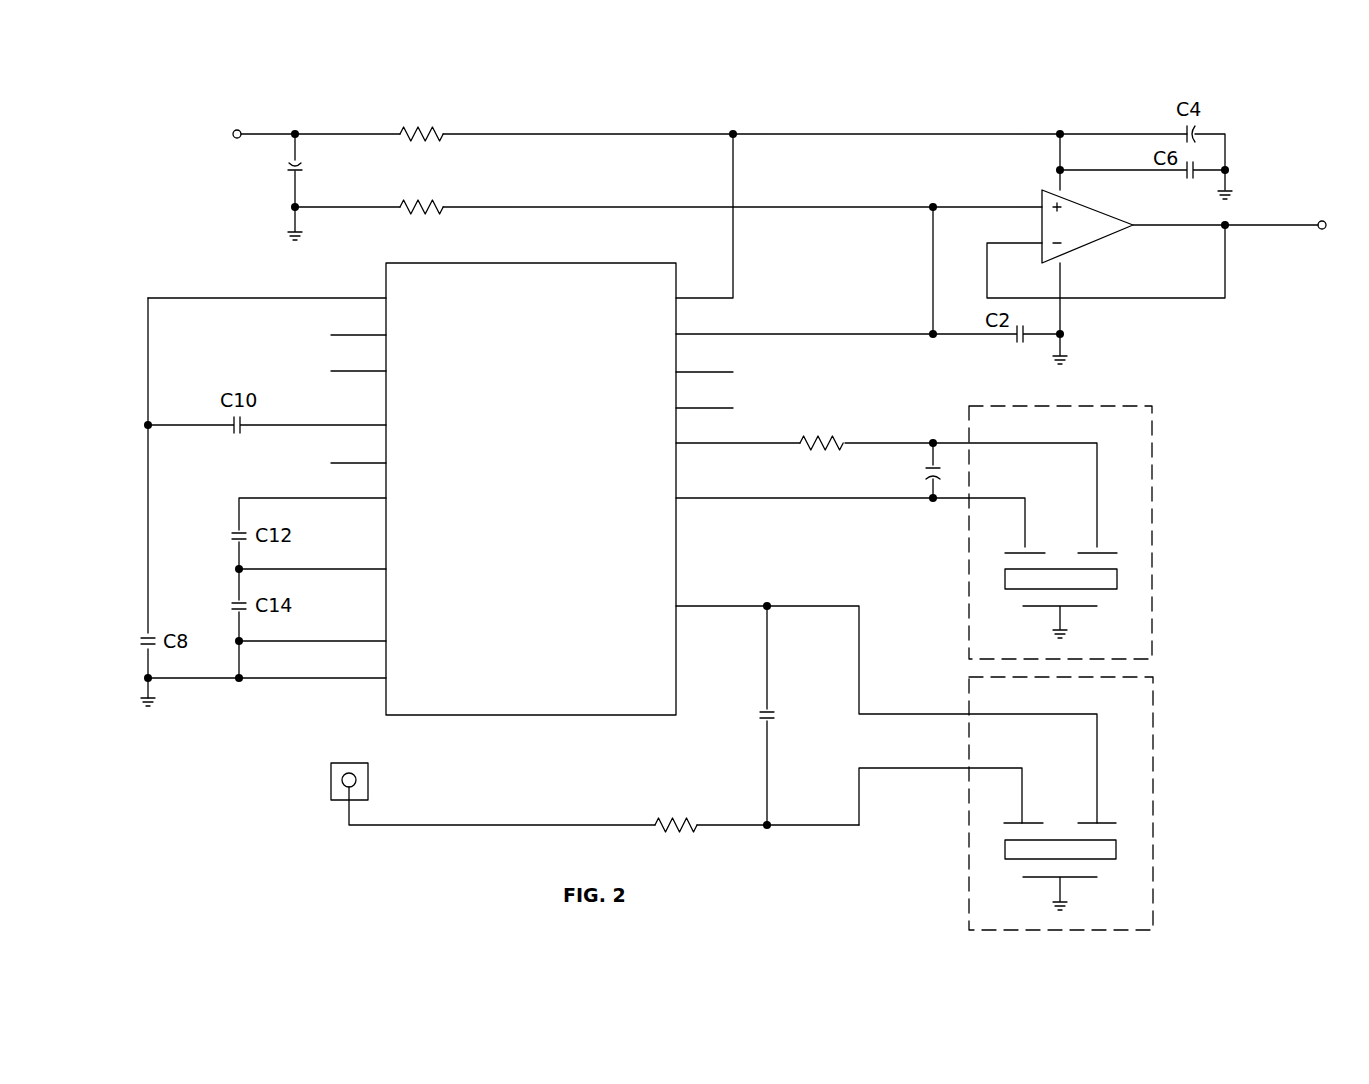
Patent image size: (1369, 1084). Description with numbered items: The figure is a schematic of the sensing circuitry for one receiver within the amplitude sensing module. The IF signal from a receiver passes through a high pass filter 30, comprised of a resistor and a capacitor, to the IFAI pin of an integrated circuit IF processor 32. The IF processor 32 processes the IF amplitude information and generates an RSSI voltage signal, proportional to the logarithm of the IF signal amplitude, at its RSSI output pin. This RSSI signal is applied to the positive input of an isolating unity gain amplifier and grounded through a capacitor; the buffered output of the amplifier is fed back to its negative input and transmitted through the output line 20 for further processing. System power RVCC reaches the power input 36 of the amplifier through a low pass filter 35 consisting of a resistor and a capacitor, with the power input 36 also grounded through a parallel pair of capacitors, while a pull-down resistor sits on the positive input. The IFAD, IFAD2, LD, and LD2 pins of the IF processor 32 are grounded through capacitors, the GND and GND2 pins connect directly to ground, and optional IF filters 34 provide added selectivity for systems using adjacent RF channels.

The output line 20 is at (1281, 224).
The high pass filter 30 is at (742, 838).
The integrated circuit IF processor 32 is at (530, 716).
The IF filter 34 is at (1152, 519).
The low pass filter 35 is at (323, 121).
The power input 36 is at (1057, 190).